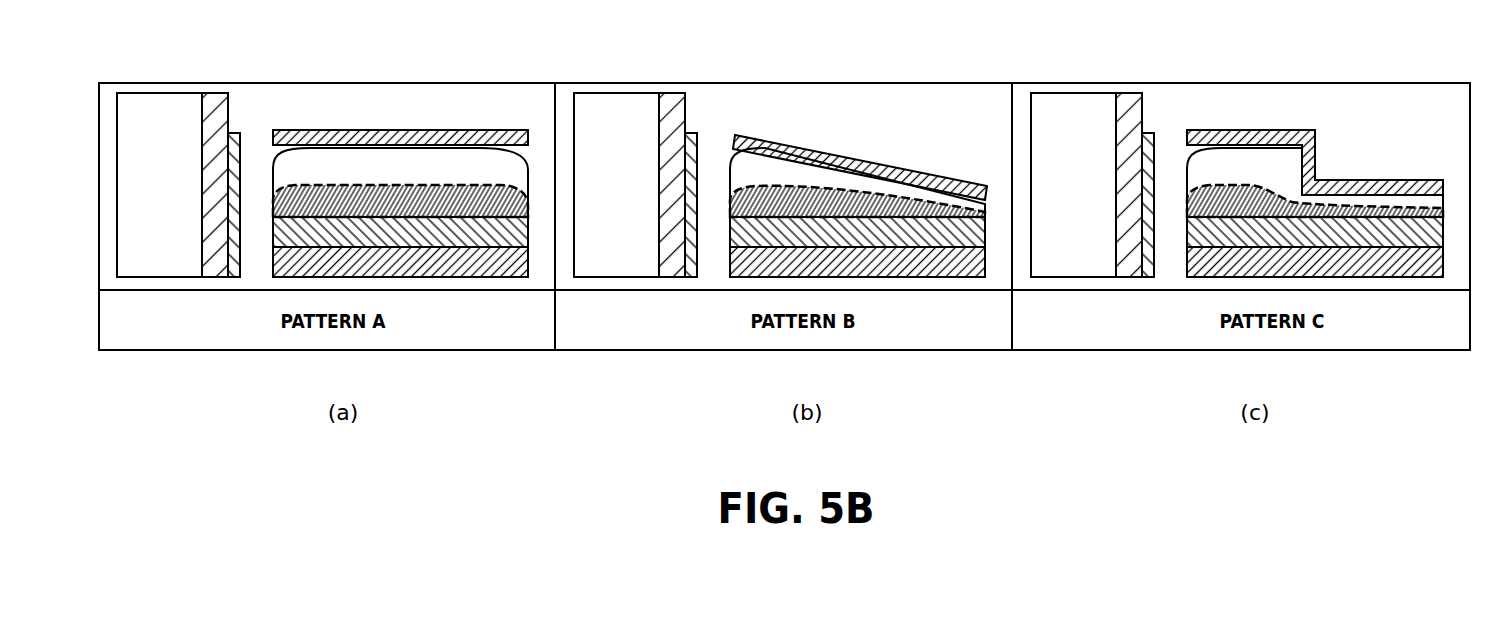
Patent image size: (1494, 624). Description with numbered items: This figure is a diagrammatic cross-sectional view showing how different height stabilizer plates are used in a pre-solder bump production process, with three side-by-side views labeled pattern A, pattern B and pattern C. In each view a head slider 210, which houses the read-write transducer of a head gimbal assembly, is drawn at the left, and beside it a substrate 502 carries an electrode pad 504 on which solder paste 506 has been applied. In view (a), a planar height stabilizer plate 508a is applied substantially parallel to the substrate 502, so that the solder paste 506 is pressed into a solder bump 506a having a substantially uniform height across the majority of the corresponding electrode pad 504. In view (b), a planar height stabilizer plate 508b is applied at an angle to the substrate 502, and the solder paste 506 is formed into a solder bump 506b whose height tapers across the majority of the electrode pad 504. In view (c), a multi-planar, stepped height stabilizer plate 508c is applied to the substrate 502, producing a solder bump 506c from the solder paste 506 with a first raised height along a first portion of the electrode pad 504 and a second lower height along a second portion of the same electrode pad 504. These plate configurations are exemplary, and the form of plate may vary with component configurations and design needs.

The head slider 210 is at (179, 135).
The substrate 502 is at (504, 265).
The electrode pad 504 is at (524, 237).
The solder paste 506 is at (500, 175).
The solder bump 506a is at (508, 203).
The solder bump 506b is at (917, 198).
The solder bump 506c is at (1397, 208).
The planar height stabilizer plate 508a is at (499, 131).
The planar height stabilizer plate 508b is at (855, 165).
The multi-planar height stabilizer plate 508c is at (1360, 180).